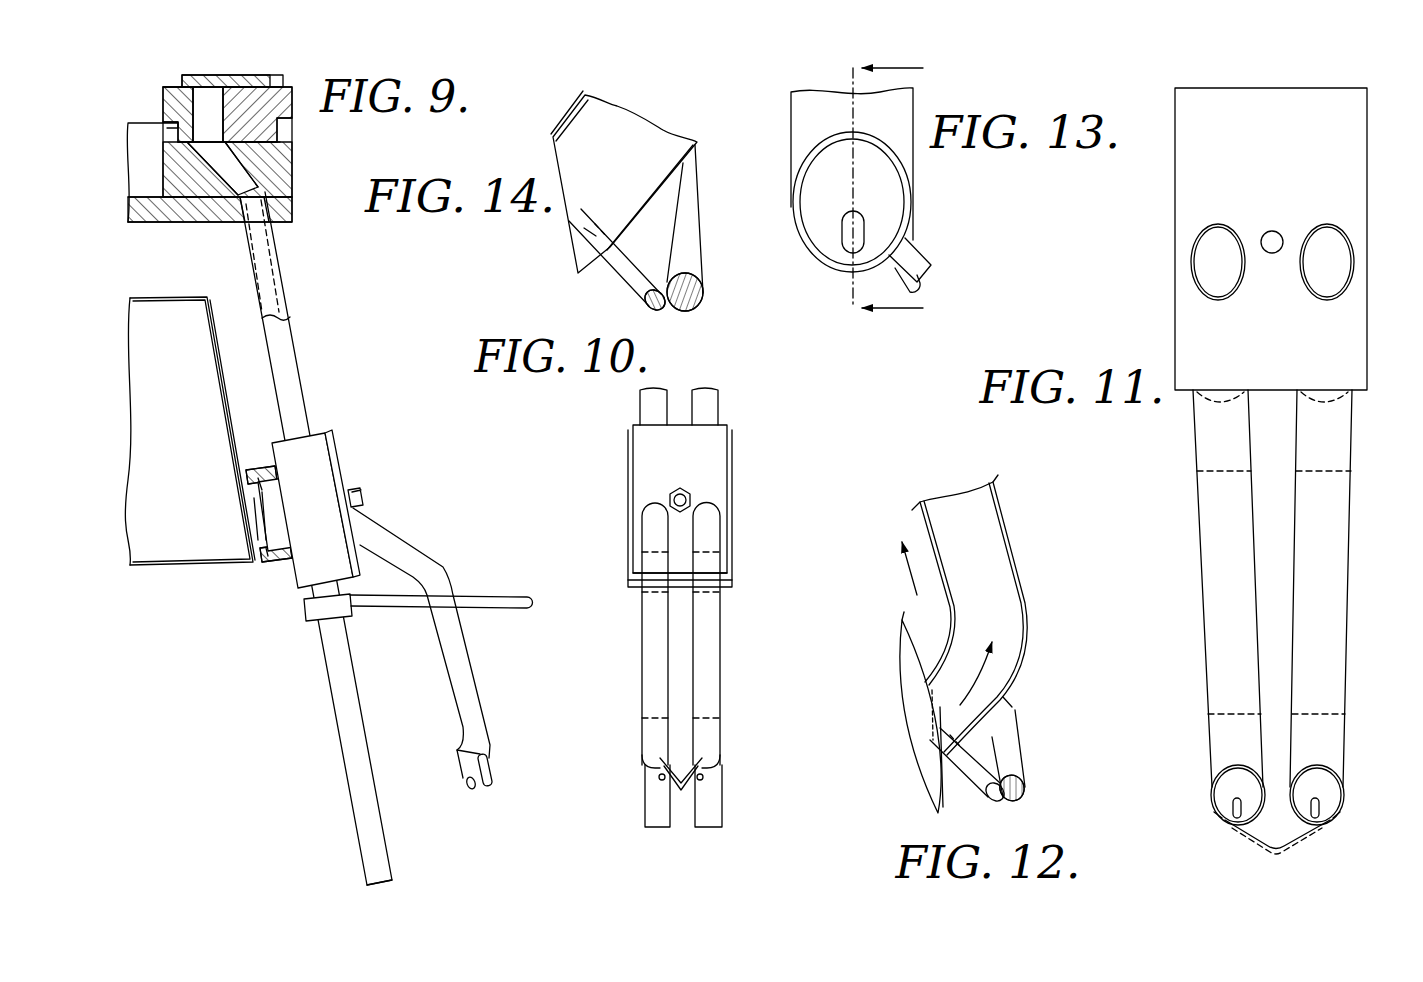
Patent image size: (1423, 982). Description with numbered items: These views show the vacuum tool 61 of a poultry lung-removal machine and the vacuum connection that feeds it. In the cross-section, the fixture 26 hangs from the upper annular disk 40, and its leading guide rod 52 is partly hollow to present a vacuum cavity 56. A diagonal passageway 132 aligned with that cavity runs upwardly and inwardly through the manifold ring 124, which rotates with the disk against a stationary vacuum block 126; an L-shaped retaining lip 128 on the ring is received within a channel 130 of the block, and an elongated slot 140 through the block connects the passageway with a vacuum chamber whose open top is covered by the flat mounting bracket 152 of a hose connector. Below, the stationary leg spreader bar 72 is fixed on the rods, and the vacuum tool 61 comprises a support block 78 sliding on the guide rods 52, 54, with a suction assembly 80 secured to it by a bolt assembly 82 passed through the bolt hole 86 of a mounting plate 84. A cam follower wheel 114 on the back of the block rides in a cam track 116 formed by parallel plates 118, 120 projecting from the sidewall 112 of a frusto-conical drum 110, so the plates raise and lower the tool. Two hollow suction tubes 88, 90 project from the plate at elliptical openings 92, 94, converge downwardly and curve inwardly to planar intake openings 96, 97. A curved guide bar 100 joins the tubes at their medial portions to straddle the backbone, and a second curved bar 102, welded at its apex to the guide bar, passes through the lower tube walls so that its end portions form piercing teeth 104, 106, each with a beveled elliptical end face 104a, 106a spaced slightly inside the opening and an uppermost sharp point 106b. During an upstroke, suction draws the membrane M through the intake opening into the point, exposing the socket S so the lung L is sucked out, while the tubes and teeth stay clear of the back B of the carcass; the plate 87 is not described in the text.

In FIG. 9, the fixture 26 is at (333, 740).
In FIG. 10, the fixture 26 is at (728, 803).
In FIG. 9, the upper annular disk 40 is at (292, 212).
In FIG. 9, the leading guide rod 52 is at (371, 851).
In FIG. 10, the leading guide rod 52 is at (657, 828).
In FIG. 10, the trailing guide rod 54 is at (705, 828).
In FIG. 9, the vacuum cavity 56 is at (270, 286).
In FIG. 9, the vacuum tool 61 is at (352, 456).
In FIG. 10, the vacuum tool 61 is at (737, 456).
In FIG. 9, the leg spreader bar 72 is at (490, 596).
In FIG. 9, the support block 78 is at (300, 600).
In FIG. 10, the support block 78 is at (737, 583).
In FIG. 11, the suction assembly 80 is at (1173, 318).
In FIG. 9, the bolt assembly 82 is at (362, 497).
In FIG. 10, the bolt assembly 82 is at (680, 489).
In FIG. 9, the mounting plate 84 is at (332, 440).
In FIG. 10, the mounting plate 84 is at (640, 440).
In FIG. 11, the bolt hole 86 is at (1270, 232).
In FIG. 11, the bracket plate 87 is at (1355, 133).
In FIG. 9, the suction tube 88 is at (430, 573).
In FIG. 10, the suction tube 88 is at (649, 663).
In FIG. 11, the suction tube 88 is at (1340, 630).
In FIG. 14, the suction tube 90 is at (661, 136).
In FIG. 13, the suction tube 90 is at (796, 112).
In FIG. 10, the suction tube 90 is at (715, 638).
In FIG. 12, the suction tube 90 is at (992, 511).
In FIG. 11, the suction tube 90 is at (1201, 571).
In FIG. 11, the elliptical opening 92 is at (1345, 256).
In FIG. 11, the elliptical opening 94 is at (1200, 251).
In FIG. 9, the intake opening 96 is at (448, 762).
In FIG. 11, the intake opening 96 is at (1350, 776).
In FIG. 14, the intake opening 97 is at (550, 150).
In FIG. 13, the intake opening 97 is at (910, 190).
In FIG. 11, the intake opening 97 is at (1207, 776).
In FIG. 9, the guide bar 100 is at (488, 772).
In FIG. 14, the guide bar 100 is at (688, 256).
In FIG. 13, the guide bar 100 is at (915, 258).
In FIG. 10, the guide bar 100 is at (706, 771).
In FIG. 12, the guide bar 100 is at (1013, 763).
In FIG. 11, the guide bar 100 is at (1268, 843).
In FIG. 9, the curved bar 102 is at (472, 789).
In FIG. 14, the curved bar 102 is at (628, 286).
In FIG. 13, the curved bar 102 is at (922, 284).
In FIG. 10, the curved bar 102 is at (667, 786).
In FIG. 12, the curved bar 102 is at (968, 788).
In FIG. 11, the curved bar 102 is at (1300, 844).
In FIG. 11, the piercing tooth 104 is at (1328, 818).
In FIG. 11, the elliptical end face 104a is at (1320, 808).
In FIG. 14, the piercing tooth 106 is at (592, 232).
In FIG. 13, the piercing tooth 106 is at (846, 254).
In FIG. 12, the piercing tooth 106 is at (1003, 700).
In FIG. 11, the piercing tooth 106 is at (1230, 820).
In FIG. 14, the elliptical end face 106a is at (575, 238).
In FIG. 13, the elliptical end face 106a is at (859, 231).
In FIG. 11, the elliptical end face 106a is at (1232, 808).
In FIG. 14, the sharp point 106b is at (578, 216).
In FIG. 13, the sharp point 106b is at (846, 226).
In FIG. 12, the sharp point 106b is at (933, 738).
In FIG. 9, the drum 110 is at (176, 297).
In FIG. 9, the sidewall 112 is at (207, 345).
In FIG. 9, the cam follower wheel 114 is at (260, 499).
In FIG. 9, the cam track 116 is at (265, 568).
In FIG. 9, the plate 118 is at (258, 470).
In FIG. 9, the plate 120 is at (258, 553).
In FIG. 9, the manifold ring 124 is at (285, 171).
In FIG. 9, the vacuum block 126 is at (164, 95).
In FIG. 9, the retaining lip 128 is at (293, 118).
In FIG. 9, the channel 130 is at (164, 125).
In FIG. 9, the diagonal passageway 132 is at (222, 162).
In FIG. 9, the slot 140 is at (213, 100).
In FIG. 9, the mounting bracket 152 is at (203, 85).
In FIG. 12, the socket S is at (905, 652).
In FIG. 12, the membrane M is at (940, 705).
In FIG. 12, the lung L is at (917, 742).
In FIG. 12, the back B is at (928, 778).